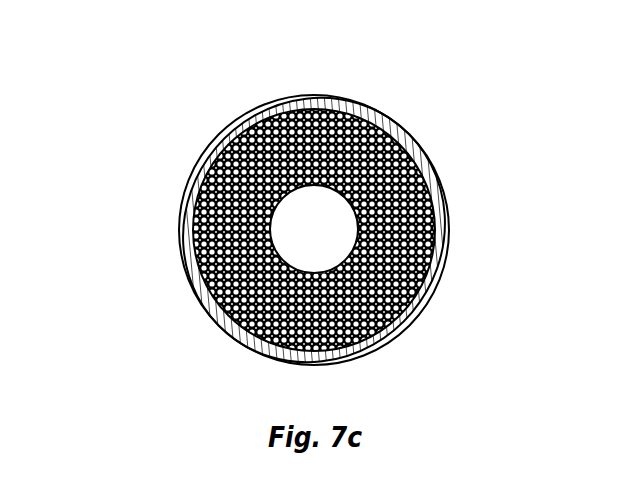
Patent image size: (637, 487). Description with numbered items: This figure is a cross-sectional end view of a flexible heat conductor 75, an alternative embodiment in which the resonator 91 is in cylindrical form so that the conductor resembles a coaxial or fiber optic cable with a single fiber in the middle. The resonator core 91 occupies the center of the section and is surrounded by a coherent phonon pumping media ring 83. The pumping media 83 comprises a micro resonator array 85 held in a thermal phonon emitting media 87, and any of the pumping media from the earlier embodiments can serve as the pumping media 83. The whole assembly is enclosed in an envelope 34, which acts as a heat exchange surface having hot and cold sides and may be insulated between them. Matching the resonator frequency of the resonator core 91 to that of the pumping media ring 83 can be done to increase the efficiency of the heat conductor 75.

The flexible heat conductor 75 is at (188, 108).
The envelope 34 is at (285, 100).
The coherent phonon pumping media 83 is at (207, 164).
The thermal phonon emitting media 87 is at (192, 222).
The micro resonator array 85 is at (236, 300).
The resonator 91 is at (341, 232).